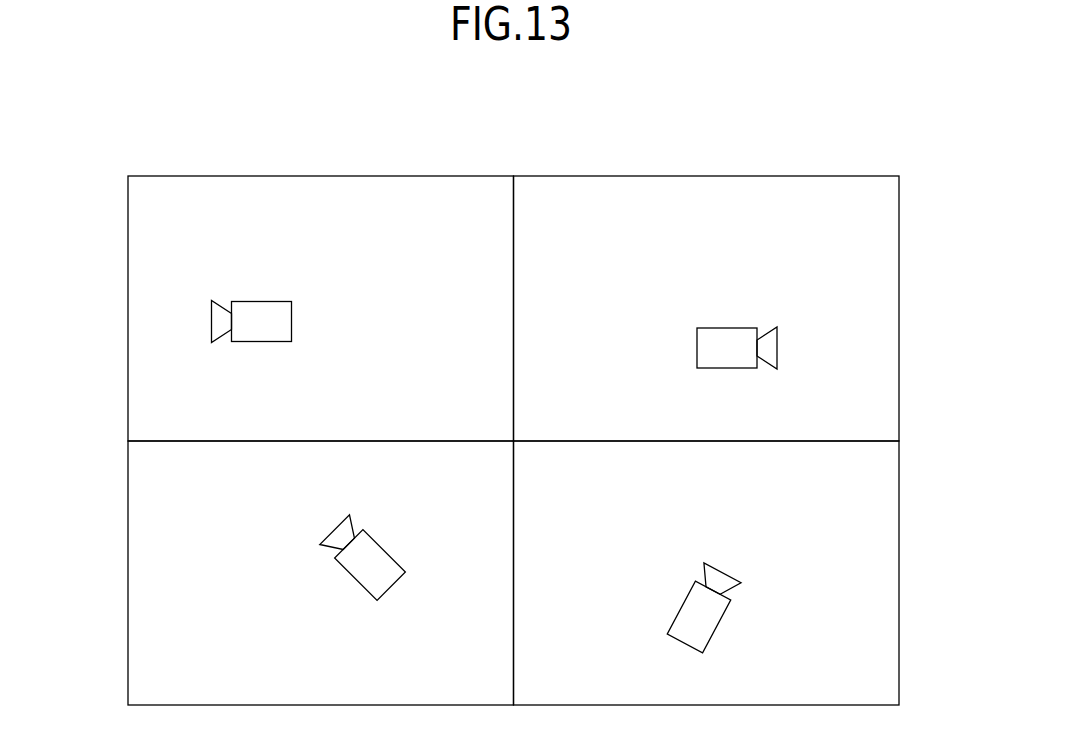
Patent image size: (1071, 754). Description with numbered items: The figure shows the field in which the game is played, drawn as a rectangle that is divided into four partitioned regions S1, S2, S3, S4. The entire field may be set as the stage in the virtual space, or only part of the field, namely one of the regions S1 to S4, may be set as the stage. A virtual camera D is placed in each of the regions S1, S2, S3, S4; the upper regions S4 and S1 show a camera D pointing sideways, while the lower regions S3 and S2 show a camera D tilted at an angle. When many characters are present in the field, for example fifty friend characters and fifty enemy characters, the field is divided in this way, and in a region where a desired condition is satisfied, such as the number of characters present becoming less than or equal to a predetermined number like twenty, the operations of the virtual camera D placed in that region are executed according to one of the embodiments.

The partitioned region S1 is at (887, 307).
The partitioned region S2 is at (887, 574).
The partitioned region S3 is at (142, 574).
The partitioned region S4 is at (142, 307).
The virtual camera D is at (292, 321).